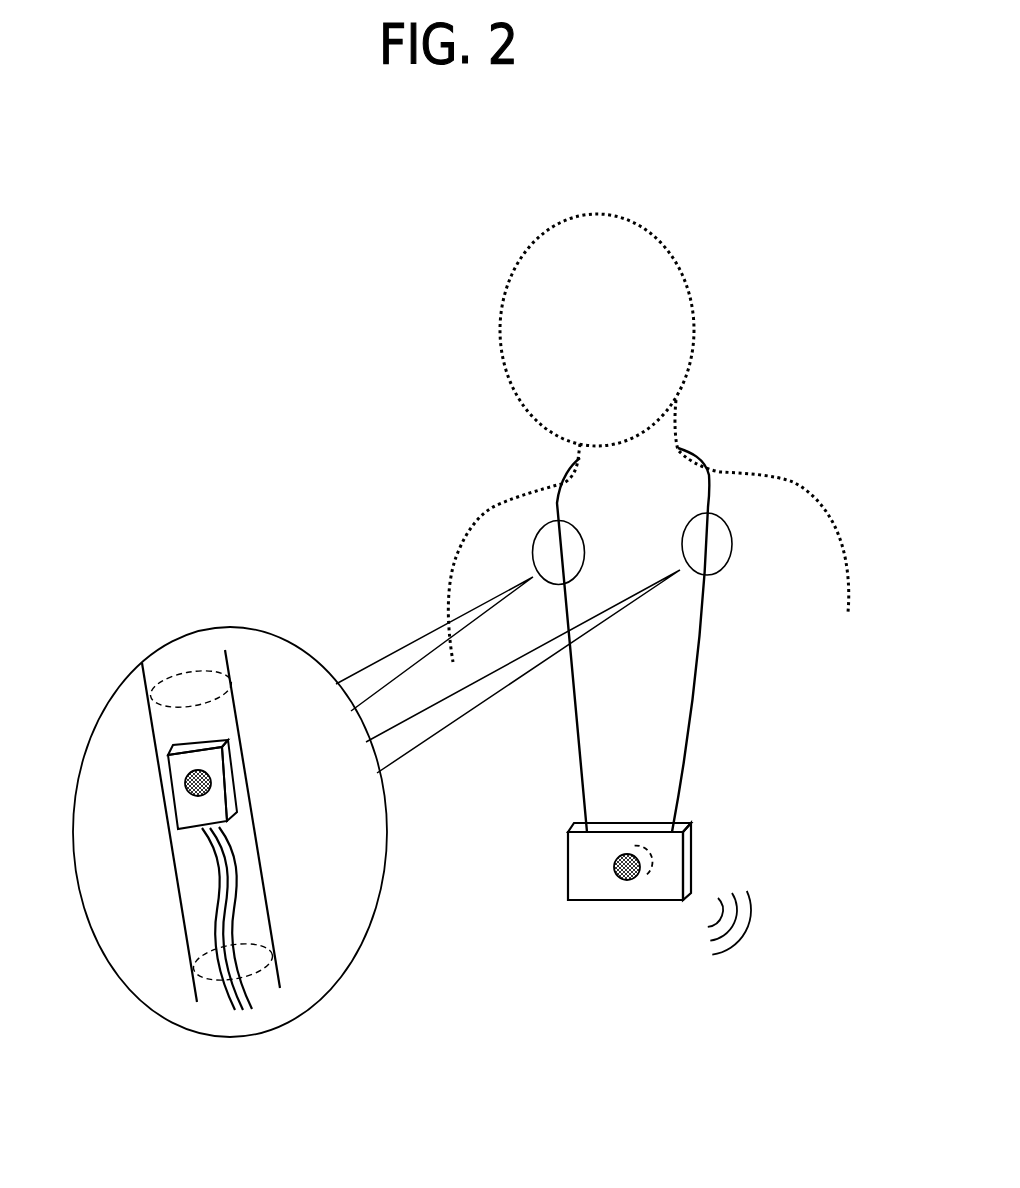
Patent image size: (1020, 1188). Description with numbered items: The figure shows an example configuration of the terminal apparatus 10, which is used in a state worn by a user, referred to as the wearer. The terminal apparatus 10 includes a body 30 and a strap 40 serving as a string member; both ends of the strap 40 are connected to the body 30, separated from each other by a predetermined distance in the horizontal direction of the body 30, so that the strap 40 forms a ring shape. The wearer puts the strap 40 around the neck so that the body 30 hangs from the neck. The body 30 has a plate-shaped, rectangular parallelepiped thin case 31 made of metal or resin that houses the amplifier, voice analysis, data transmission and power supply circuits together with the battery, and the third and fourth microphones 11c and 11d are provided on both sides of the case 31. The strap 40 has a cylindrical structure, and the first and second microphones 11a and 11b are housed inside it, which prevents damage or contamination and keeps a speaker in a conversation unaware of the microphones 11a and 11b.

The terminal apparatus 10 is at (730, 423).
The strap 40 is at (702, 652).
The first microphone 11a is at (212, 778).
The second microphone 11b is at (549, 643).
The body 30 is at (625, 927).
The case 31 is at (568, 866).
The third microphone 11c is at (622, 880).
The fourth microphone 11d is at (652, 861).